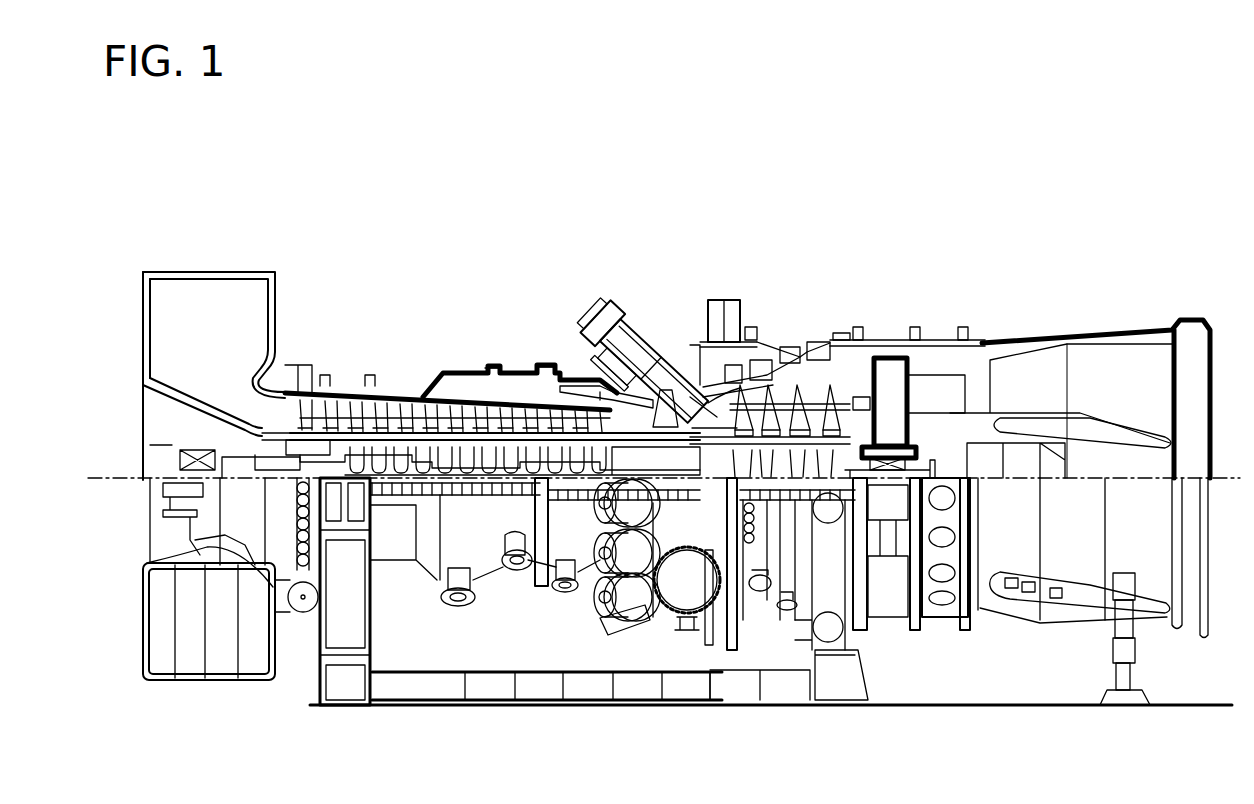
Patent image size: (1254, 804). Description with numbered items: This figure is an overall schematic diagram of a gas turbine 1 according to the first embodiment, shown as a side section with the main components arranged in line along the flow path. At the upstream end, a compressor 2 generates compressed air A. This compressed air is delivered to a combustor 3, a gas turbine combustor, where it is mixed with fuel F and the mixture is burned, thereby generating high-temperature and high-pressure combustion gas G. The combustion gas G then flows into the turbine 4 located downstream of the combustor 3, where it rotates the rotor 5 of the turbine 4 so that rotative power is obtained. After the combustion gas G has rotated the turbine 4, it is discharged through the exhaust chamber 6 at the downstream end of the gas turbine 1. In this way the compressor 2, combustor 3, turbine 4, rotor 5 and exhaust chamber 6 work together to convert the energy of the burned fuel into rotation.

The gas turbine 1 is at (957, 189).
The compressor 2 is at (402, 394).
The combustor 3 is at (635, 322).
The turbine 4 is at (818, 335).
The rotor 5 is at (838, 462).
The exhaust chamber 6 is at (989, 340).